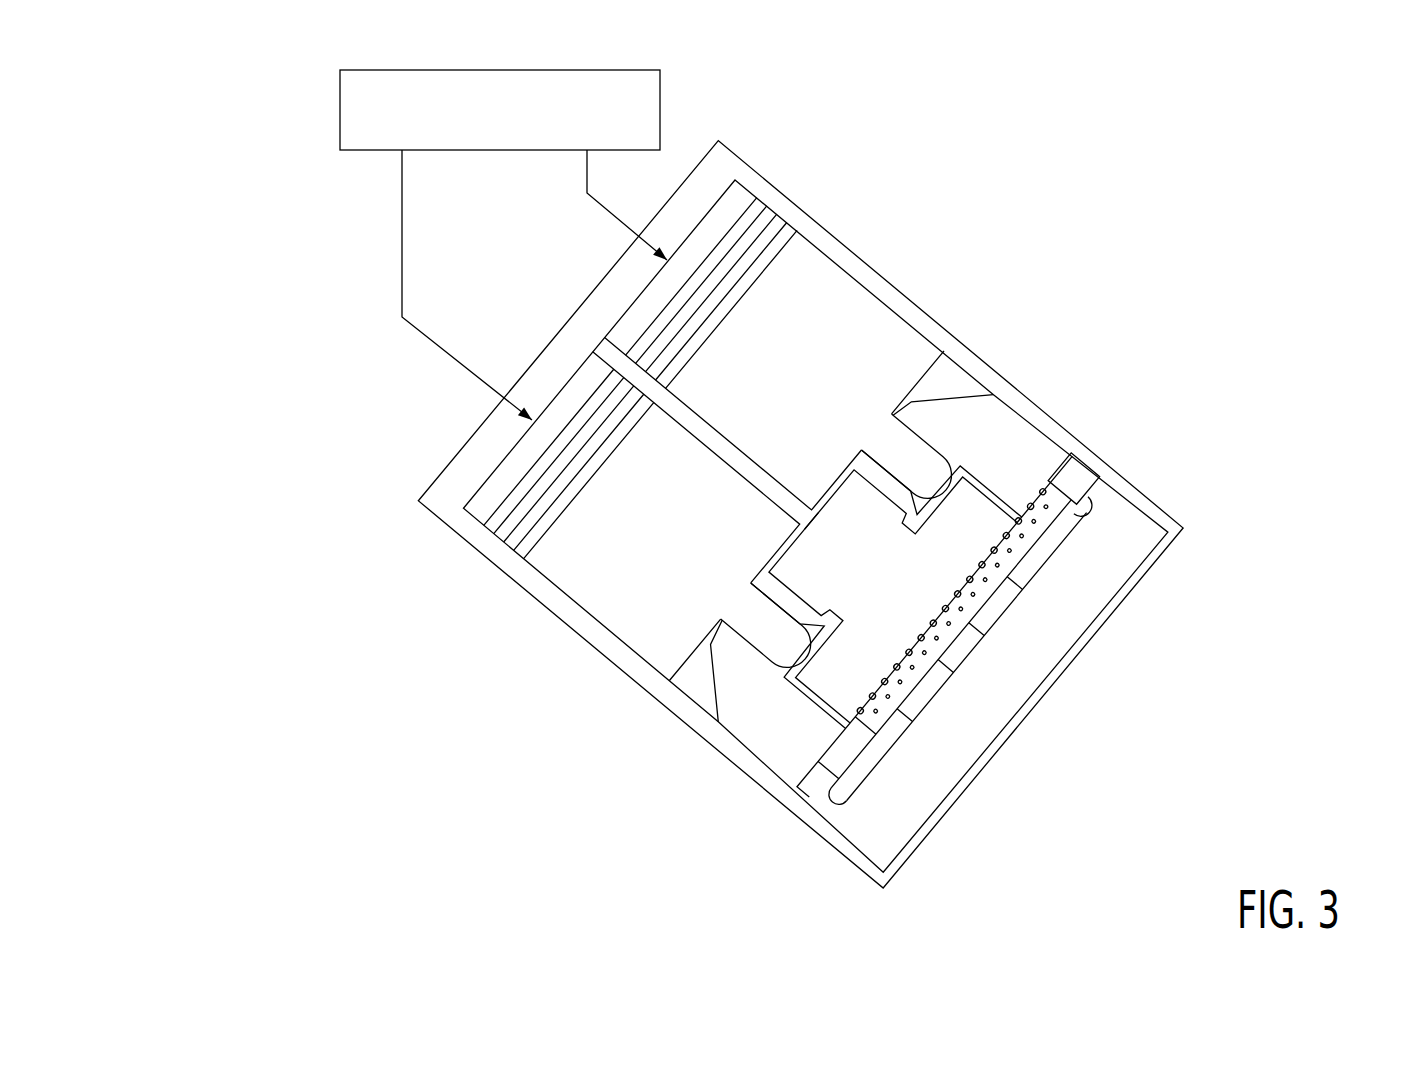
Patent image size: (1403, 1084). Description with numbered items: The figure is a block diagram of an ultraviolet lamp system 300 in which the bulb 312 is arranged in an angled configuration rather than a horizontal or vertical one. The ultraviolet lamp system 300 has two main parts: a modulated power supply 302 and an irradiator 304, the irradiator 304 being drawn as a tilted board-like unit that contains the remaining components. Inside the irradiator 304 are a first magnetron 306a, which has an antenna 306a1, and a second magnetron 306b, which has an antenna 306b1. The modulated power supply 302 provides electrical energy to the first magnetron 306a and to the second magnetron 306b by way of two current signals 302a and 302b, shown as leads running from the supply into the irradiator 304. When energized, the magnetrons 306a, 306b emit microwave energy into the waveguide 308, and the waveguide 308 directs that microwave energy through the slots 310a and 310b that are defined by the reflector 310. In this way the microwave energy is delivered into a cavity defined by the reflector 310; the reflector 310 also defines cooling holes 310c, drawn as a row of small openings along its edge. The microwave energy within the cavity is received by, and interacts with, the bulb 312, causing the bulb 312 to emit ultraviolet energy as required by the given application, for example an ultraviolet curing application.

The ultraviolet lamp system 300 is at (277, 185).
The modulated power supply 302 is at (481, 136).
The current signal 302a is at (426, 336).
The current signal 302b is at (601, 208).
The irradiator 304 is at (779, 178).
The first magnetron 306a is at (628, 536).
The antenna 306a1 is at (767, 643).
The second magnetron 306b is at (775, 379).
The antenna 306b1 is at (915, 455).
The waveguide 308 is at (1020, 453).
The reflector 310 is at (1146, 492).
The slot 310a is at (823, 802).
The slot 310b is at (1069, 478).
The cooling holes 310c is at (1027, 542).
The bulb 312 is at (1037, 567).